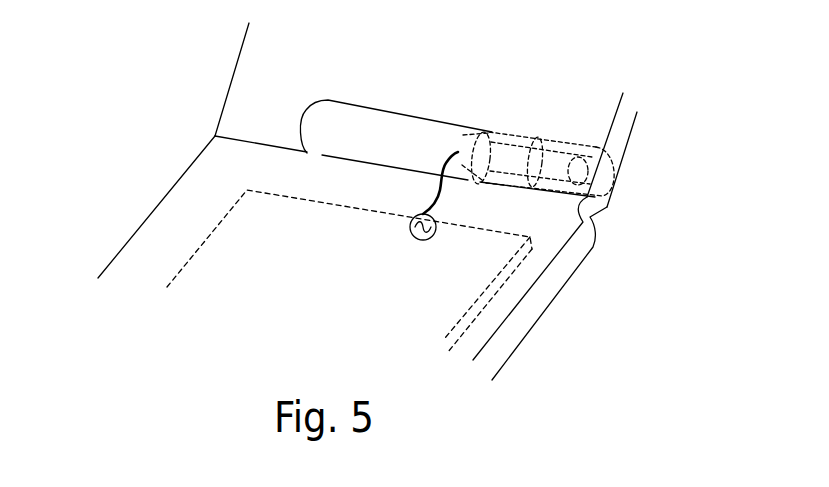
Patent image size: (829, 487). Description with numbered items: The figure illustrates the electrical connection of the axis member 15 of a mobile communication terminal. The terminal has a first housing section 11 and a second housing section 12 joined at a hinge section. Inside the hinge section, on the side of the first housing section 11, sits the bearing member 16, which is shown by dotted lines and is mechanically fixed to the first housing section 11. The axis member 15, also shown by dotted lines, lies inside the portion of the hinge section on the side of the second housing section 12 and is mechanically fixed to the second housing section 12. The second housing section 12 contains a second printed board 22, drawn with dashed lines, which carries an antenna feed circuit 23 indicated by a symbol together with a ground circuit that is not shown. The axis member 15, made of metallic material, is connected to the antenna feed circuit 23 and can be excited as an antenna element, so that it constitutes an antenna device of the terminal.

The first housing section 11 is at (240, 53).
The second housing section 12 is at (177, 177).
The axis member 15 is at (467, 128).
The bearing member 16 is at (538, 138).
The second printed board 22 is at (200, 250).
The antenna feed circuit 23 is at (420, 241).